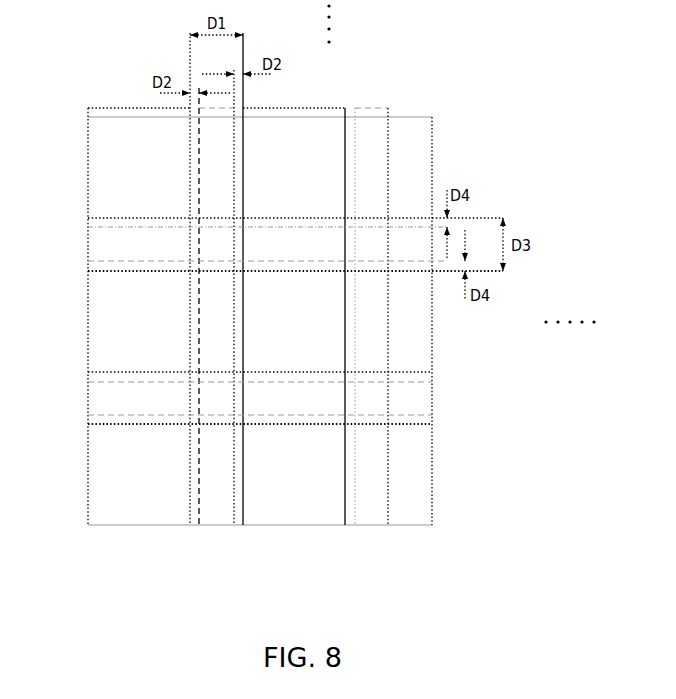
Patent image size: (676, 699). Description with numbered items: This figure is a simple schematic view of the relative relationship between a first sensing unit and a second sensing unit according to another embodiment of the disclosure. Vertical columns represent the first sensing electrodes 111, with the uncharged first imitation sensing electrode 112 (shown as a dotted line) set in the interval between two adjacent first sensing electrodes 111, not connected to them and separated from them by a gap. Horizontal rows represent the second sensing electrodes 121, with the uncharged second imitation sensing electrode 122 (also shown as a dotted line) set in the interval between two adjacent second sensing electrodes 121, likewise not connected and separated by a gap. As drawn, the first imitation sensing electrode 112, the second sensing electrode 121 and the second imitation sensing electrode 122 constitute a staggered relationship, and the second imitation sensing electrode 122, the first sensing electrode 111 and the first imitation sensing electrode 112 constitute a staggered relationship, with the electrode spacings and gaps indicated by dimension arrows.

The first sensing electrode 111 is at (135, 525).
The first imitation sensing electrode 112 is at (215, 525).
The second sensing electrode 121 is at (88, 314).
The second imitation sensing electrode 122 is at (88, 243).